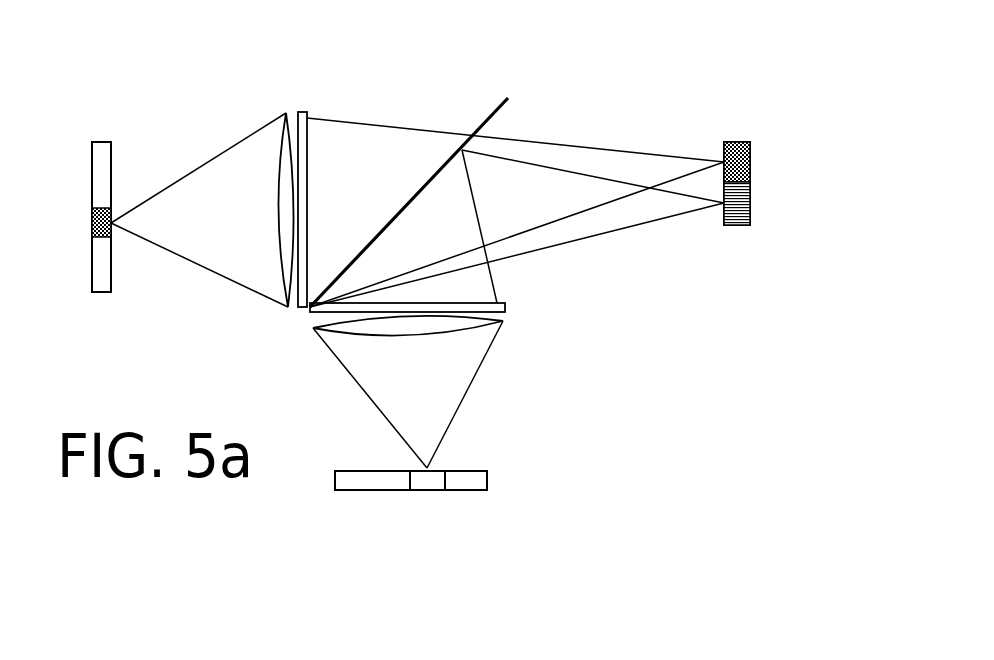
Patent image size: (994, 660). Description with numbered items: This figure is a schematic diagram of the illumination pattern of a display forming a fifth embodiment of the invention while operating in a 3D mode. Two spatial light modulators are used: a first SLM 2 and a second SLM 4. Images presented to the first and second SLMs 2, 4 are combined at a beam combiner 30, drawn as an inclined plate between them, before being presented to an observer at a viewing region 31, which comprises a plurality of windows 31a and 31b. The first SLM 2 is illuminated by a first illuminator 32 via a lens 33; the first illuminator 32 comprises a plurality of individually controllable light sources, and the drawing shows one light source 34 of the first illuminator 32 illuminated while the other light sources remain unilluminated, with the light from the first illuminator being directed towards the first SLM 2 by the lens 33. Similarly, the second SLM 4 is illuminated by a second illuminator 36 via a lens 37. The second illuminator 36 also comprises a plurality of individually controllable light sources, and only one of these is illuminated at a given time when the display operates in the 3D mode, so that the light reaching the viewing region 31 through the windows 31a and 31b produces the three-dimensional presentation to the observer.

The first spatial light modulator 2 is at (503, 302).
The second spatial light modulator 4 is at (308, 113).
The beam combiner 30 is at (496, 108).
The viewing region 31 is at (752, 155).
The window 31a is at (752, 173).
The window 31b is at (752, 203).
The detector assembly 3D is at (841, 177).
The first illuminator 32 is at (490, 480).
The lens 33 is at (505, 322).
The light source 34 is at (430, 490).
The second illuminator 36 is at (106, 292).
The lens 37 is at (282, 140).